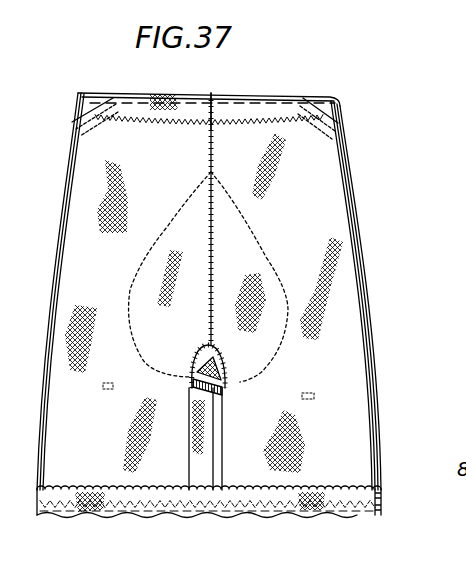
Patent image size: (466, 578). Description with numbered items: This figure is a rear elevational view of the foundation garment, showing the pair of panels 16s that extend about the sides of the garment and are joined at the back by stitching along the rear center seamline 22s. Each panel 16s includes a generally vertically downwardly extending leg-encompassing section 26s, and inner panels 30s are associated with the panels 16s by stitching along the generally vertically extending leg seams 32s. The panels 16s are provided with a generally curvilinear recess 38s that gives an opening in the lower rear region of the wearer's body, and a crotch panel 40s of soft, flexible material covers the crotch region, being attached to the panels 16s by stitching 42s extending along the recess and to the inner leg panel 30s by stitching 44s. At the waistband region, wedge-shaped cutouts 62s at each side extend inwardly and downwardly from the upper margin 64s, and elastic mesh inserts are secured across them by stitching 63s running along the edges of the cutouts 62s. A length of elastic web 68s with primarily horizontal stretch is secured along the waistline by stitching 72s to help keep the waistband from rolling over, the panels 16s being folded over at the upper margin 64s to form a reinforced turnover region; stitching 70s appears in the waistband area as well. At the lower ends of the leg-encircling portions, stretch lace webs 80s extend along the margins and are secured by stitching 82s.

The panels 16s is at (97, 300).
The rear center seamline 22s is at (211, 282).
The leg-encompassing section 26s is at (105, 468).
The inner panels 30s is at (202, 478).
The leg seams 32s is at (190, 474).
The curvilinear recess 38s is at (222, 350).
The crotch panel 40s is at (192, 378).
The stitching 42s is at (225, 368).
The stitching 44s is at (195, 375).
The wedge-shaped cutouts 62s is at (86, 103).
The stitching 63s is at (111, 99).
The upper margin 64s is at (148, 93).
The elastic web 68s is at (274, 106).
The center seam top 70s is at (227, 93).
The stitching 72s is at (232, 219).
The lace webs 80s is at (351, 512).
The stitching 82s is at (382, 502).